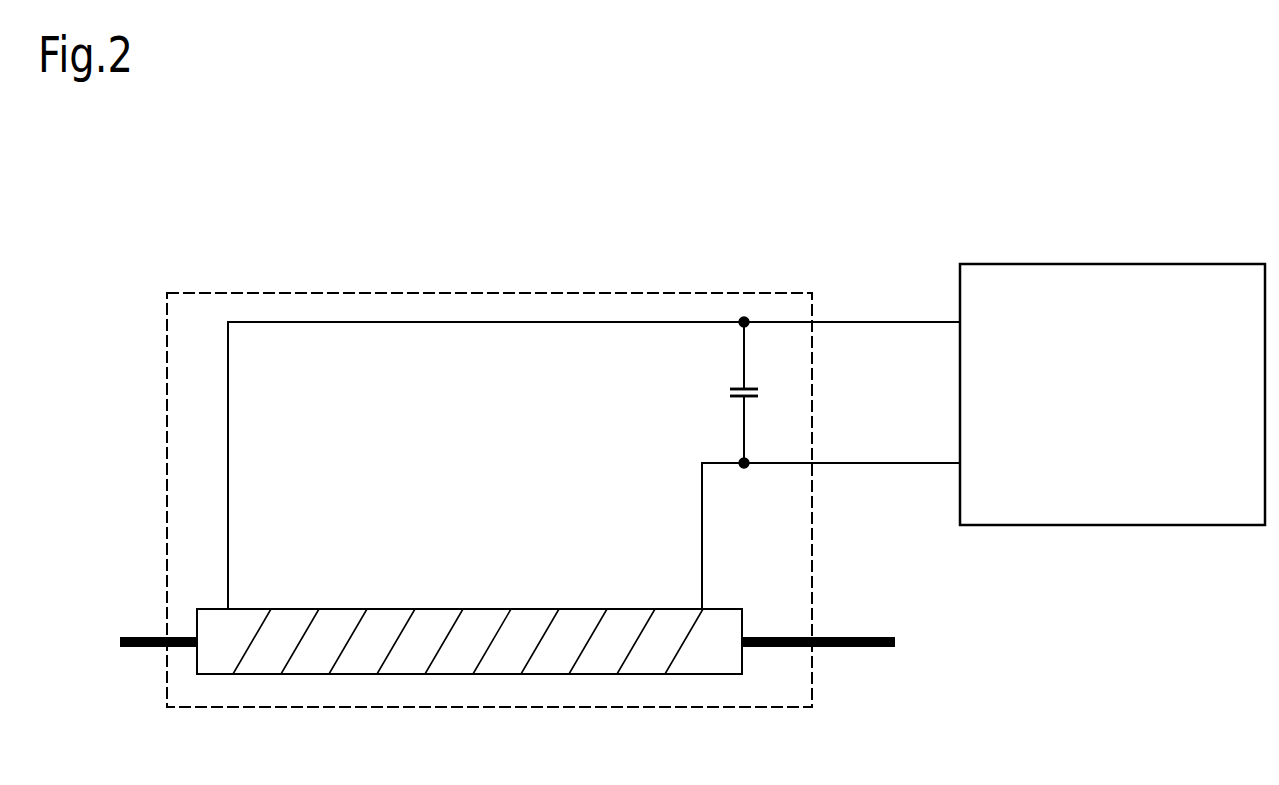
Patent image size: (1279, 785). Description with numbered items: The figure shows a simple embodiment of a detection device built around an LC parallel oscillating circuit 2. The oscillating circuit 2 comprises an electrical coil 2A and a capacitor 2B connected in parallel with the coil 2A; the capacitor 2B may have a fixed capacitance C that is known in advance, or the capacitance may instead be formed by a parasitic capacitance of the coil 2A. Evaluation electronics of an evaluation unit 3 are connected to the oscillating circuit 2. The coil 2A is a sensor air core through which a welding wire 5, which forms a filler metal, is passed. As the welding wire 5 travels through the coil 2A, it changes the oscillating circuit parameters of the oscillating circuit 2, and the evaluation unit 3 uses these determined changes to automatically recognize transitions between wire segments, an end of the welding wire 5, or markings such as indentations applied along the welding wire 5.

The LC parallel oscillating circuit 2 is at (563, 480).
The electrical coil 2A is at (426, 628).
The capacitor 2B is at (732, 396).
The capacitance C is at (757, 395).
The evaluation unit 3 is at (1112, 394).
The welding wire 5 is at (845, 648).